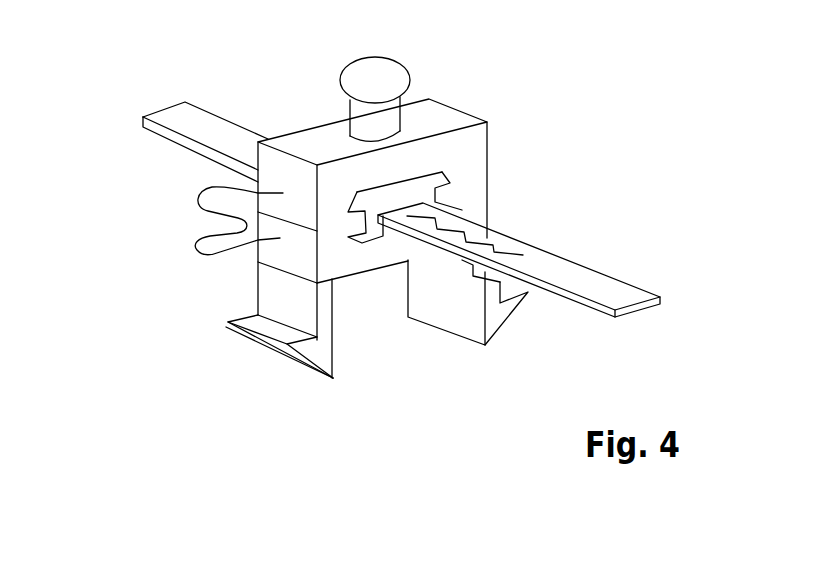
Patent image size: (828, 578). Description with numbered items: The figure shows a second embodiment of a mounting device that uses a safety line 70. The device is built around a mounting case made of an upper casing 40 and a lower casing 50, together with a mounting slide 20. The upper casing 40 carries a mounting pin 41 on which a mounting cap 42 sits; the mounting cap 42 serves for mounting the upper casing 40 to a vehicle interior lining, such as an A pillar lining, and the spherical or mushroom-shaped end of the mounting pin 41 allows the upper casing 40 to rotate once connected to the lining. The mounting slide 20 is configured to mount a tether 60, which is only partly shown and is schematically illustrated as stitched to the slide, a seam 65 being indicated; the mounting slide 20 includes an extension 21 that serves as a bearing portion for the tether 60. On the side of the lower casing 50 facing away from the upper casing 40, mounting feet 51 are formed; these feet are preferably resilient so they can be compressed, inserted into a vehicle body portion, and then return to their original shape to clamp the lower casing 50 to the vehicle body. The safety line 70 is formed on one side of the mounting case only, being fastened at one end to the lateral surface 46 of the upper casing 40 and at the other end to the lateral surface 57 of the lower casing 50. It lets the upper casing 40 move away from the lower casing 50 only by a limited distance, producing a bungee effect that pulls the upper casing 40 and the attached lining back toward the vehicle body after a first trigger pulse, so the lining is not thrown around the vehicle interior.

The mounting slide 20 is at (410, 194).
The extension 21 is at (460, 258).
The upper casing 40 is at (457, 121).
The mounting pin 41 is at (363, 110).
The mounting cap 42 is at (360, 68).
The lateral surface 46 is at (277, 182).
The lower casing 50 is at (478, 203).
The mounting feet 51 is at (430, 310).
The lateral surface 57 is at (268, 252).
The tether 60 is at (627, 298).
The seam 65 is at (503, 243).
The safety line 70 is at (195, 241).